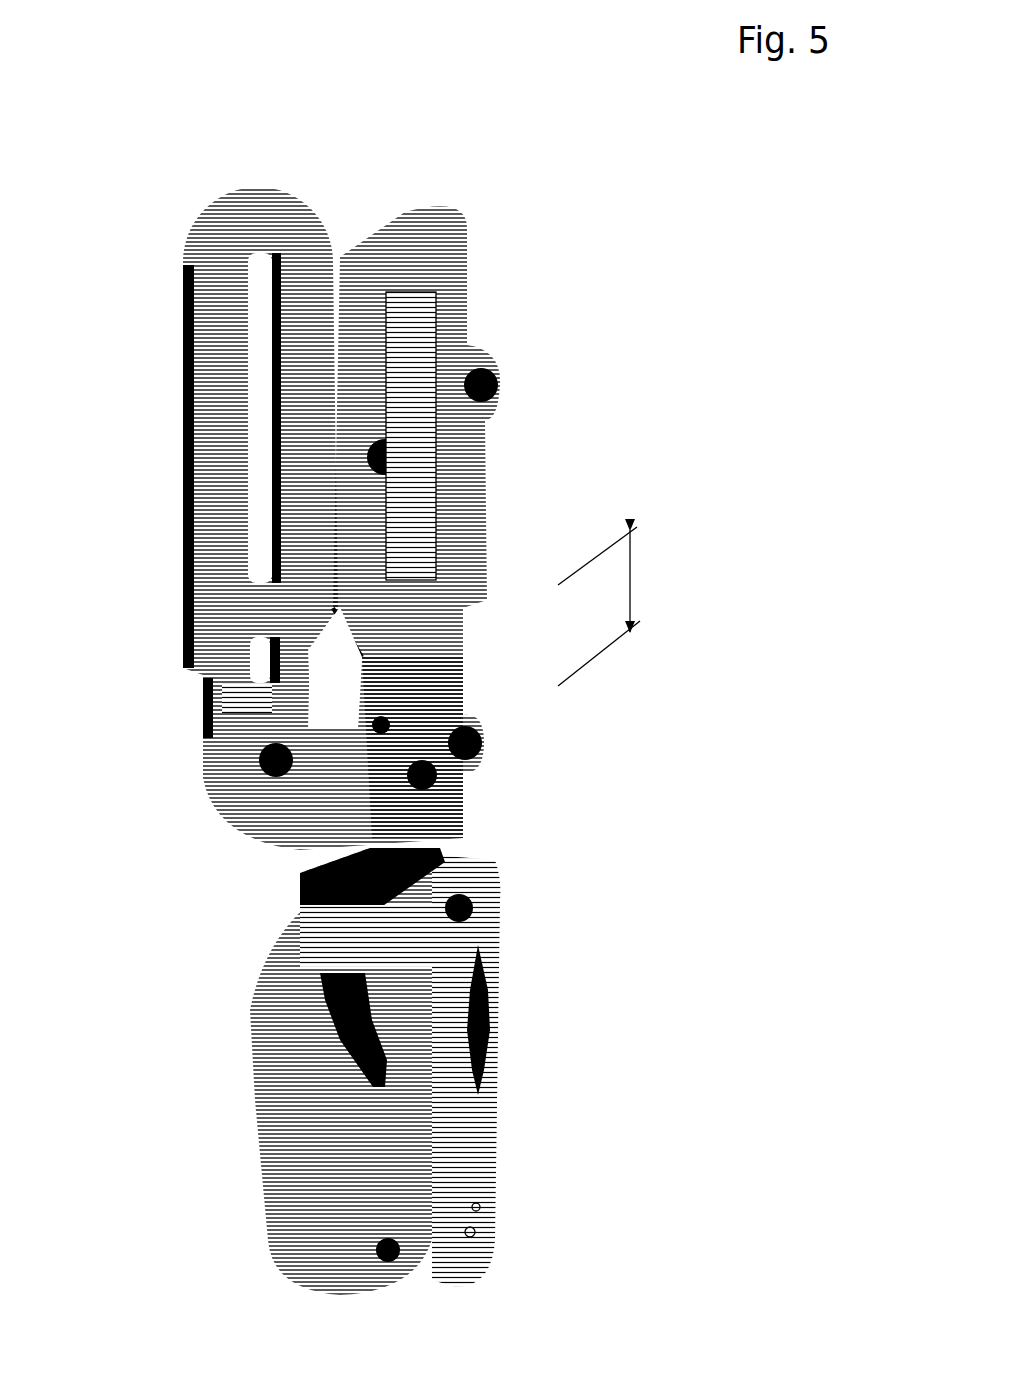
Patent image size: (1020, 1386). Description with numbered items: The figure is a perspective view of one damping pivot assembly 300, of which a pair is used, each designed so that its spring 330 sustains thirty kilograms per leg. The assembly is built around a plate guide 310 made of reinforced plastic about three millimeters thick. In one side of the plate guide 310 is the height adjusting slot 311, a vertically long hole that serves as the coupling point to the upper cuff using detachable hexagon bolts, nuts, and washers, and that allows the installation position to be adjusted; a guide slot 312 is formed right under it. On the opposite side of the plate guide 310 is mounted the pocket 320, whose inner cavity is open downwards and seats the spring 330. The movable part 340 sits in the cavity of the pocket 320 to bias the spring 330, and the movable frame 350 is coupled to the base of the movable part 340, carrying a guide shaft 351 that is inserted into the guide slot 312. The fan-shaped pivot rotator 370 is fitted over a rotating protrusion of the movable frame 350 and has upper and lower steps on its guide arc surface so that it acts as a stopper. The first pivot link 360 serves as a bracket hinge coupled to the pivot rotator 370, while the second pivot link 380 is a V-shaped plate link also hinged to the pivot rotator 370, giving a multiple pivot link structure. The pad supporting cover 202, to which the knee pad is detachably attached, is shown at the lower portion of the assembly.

The pad supporting cover 202 is at (292, 1149).
The damping pivot assembly 300 is at (348, 480).
The plate guide 310 is at (284, 213).
The height adjusting slot 311 is at (268, 355).
The guide slot 312 is at (258, 658).
The pocket 320 is at (490, 519).
The spring 330 is at (470, 323).
The movable part 340 is at (478, 690).
The movable frame 350 is at (443, 832).
The guide shaft 351 is at (282, 757).
The first pivot link 360 is at (450, 1040).
The pivot rotator 370 is at (490, 1003).
The second pivot link 380 is at (495, 1134).